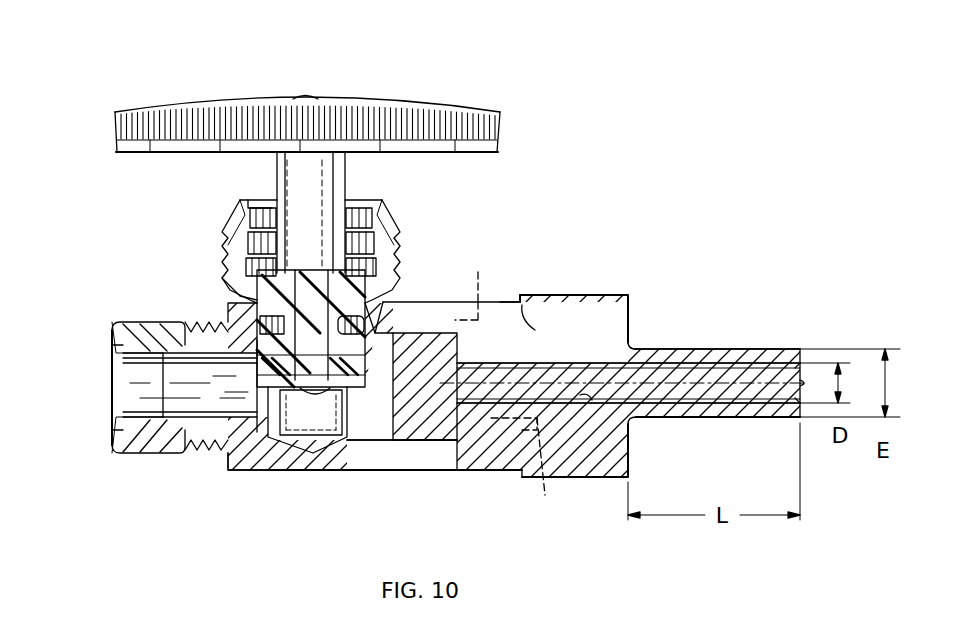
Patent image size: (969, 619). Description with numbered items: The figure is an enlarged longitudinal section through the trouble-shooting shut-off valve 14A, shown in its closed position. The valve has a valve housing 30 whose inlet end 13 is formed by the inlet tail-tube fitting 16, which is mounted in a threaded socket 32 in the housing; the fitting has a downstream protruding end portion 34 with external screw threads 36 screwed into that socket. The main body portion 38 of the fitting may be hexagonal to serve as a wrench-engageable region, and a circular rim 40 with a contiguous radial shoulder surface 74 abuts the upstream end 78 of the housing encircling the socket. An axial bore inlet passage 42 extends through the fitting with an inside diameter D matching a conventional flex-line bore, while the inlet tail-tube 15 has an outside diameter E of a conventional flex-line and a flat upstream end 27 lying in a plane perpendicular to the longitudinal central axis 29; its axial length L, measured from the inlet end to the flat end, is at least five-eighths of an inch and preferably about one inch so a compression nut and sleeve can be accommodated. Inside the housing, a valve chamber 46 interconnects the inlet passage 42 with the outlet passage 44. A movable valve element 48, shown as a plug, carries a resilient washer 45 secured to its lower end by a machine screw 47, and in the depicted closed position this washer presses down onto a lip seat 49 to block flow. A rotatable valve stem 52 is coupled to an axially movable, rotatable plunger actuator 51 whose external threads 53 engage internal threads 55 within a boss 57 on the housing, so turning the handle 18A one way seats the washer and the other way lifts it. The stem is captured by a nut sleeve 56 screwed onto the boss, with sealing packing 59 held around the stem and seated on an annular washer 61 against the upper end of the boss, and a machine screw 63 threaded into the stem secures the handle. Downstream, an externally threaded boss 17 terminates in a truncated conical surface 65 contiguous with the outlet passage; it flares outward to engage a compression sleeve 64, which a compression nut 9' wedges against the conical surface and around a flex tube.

The compression nut 9' is at (66, 405).
The inlet end 13 is at (632, 344).
The shut-off valve 14A is at (270, 471).
The inlet tail-tube 15 is at (730, 348).
The inlet tail-tube fitting 16 is at (739, 419).
The externally threaded boss 17 is at (214, 328).
The handle 18A is at (397, 96).
The upstream end 27 is at (784, 407).
The longitudinal central axis 29 is at (676, 385).
The valve housing 30 is at (412, 472).
The threaded socket 32 is at (529, 469).
The downstream protruding end portion 34 is at (472, 442).
The external screw threads 36 is at (474, 284).
The main body portion 38 is at (598, 294).
The circular rim 40 is at (514, 300).
The axial bore inlet passage 42 is at (588, 404).
The outlet passage 44 is at (226, 436).
The resilient washer 45 is at (344, 392).
The valve chamber 46 is at (316, 402).
The machine screw 47 is at (240, 472).
The movable valve element 48 is at (388, 320).
The lip seat 49 is at (257, 358).
The plunger actuator 51 is at (386, 238).
The valve stem 52 is at (347, 160).
The external threads 53 is at (240, 296).
The internal threads 55 is at (248, 272).
The nut sleeve 56 is at (246, 214).
The boss 57 is at (250, 258).
The sealing washer or gasket or packing 59 is at (350, 208).
The annular washer 61 is at (266, 204).
The machine screw 63 is at (306, 95).
The compression sleeve 64 is at (143, 452).
The truncated conical surface 65 is at (112, 373).
The radial shoulder surface 74 is at (506, 472).
The upstream end 78 is at (528, 302).